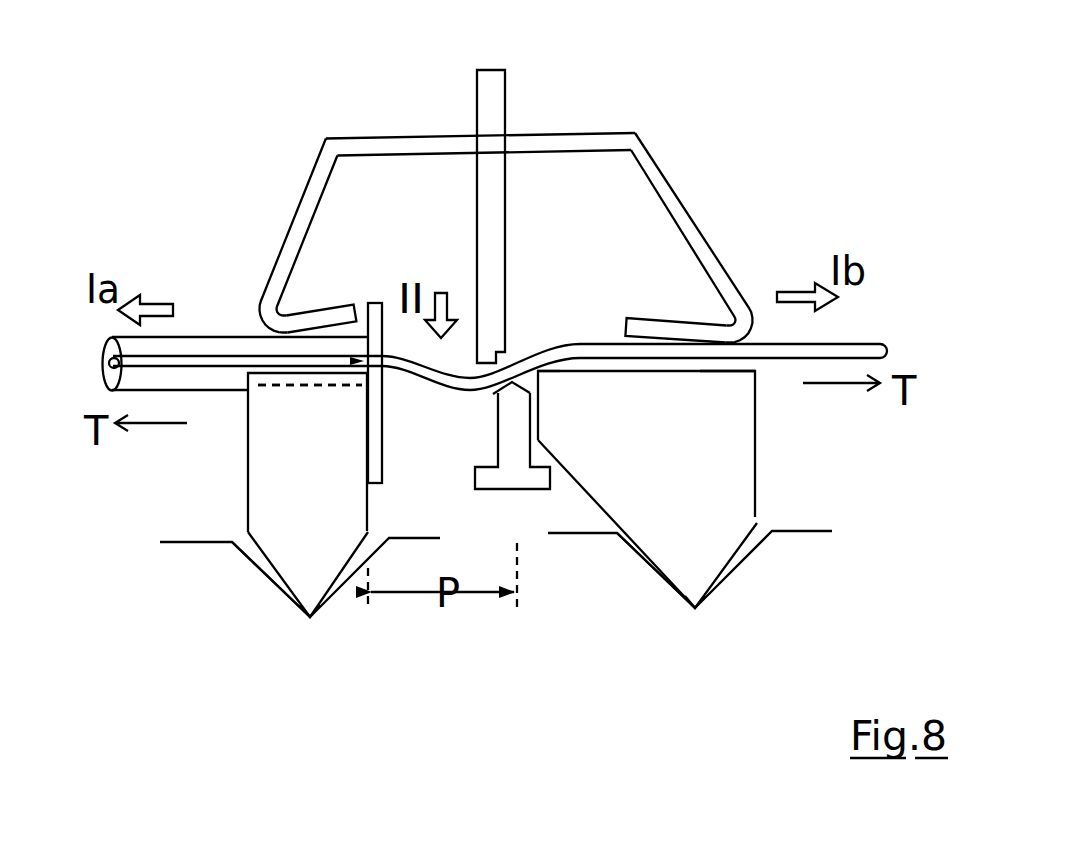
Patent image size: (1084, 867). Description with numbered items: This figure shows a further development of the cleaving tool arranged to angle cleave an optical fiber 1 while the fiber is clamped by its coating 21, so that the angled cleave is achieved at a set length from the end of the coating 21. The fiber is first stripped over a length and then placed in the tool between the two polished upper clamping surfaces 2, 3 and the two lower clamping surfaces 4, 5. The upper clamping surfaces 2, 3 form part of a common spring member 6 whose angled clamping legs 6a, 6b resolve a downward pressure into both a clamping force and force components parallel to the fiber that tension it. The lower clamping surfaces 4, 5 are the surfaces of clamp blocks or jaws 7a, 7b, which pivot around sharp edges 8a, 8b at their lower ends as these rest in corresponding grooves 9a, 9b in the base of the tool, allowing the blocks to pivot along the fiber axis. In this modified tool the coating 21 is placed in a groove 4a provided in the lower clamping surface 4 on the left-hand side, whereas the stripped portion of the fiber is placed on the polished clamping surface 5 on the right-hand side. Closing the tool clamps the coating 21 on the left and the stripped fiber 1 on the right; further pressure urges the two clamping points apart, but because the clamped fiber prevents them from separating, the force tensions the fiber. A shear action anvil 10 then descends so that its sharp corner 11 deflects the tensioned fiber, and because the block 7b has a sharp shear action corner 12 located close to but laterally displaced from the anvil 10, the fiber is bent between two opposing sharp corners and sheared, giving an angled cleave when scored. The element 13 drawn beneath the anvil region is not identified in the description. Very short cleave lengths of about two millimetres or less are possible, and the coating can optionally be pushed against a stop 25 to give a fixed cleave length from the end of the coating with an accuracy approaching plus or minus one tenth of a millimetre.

The optical fiber 1 is at (850, 336).
The upper clamping surface 2 is at (303, 322).
The upper clamping surface 3 is at (695, 336).
The lower clamping surface 4 is at (270, 382).
The groove 4a is at (296, 398).
The lower clamping surface 5 is at (714, 378).
The spring member 6 is at (608, 128).
The clamping leg 6a is at (305, 210).
The clamping leg 6b is at (700, 235).
The clamp block 7a is at (245, 491).
The clamp block 7b is at (763, 457).
The sharp edge 8a is at (306, 594).
The sharp edge 8b is at (702, 578).
The groove 9a is at (308, 640).
The groove 9b is at (694, 625).
The shear action anvil 10 is at (492, 95).
The sharp corner 11 is at (495, 352).
The sharp shear action corner 12 is at (548, 381).
The anvil 13 is at (512, 406).
The coating 21 is at (187, 333).
The stop 25 is at (385, 441).